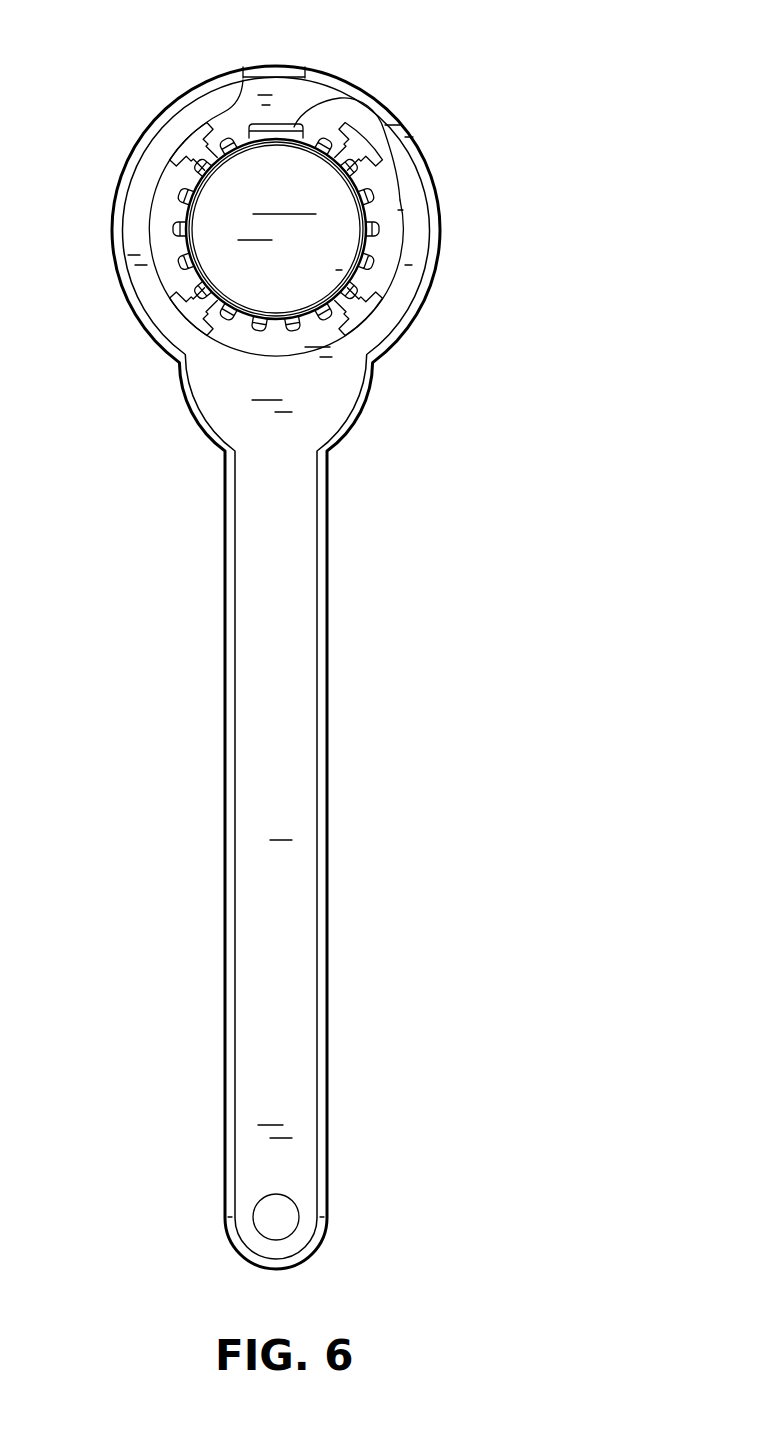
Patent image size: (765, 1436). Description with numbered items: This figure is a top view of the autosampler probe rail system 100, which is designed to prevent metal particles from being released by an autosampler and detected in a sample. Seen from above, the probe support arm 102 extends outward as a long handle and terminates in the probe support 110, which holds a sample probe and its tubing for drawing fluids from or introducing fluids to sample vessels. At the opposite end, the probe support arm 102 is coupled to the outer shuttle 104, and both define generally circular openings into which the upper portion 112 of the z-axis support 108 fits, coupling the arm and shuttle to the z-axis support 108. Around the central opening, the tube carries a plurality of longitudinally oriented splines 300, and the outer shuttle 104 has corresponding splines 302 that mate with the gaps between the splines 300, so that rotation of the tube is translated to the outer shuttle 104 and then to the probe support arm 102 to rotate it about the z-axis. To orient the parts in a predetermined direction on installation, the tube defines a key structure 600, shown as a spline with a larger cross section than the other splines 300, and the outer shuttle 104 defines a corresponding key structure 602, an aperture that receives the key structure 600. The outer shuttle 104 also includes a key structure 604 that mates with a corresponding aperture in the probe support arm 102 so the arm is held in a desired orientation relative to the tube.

The autosampler probe rail system 100 is at (560, 58).
The probe support arm 102 is at (315, 384).
The outer shuttle 104 is at (276, 80).
The z-axis support 108 is at (333, 197).
The probe support 110 is at (252, 1250).
The upper portion 112 is at (302, 265).
The splines 300 is at (326, 140).
The splines 302 is at (183, 172).
The key structure 600 is at (362, 97).
The key structure 602 is at (278, 122).
The key structure 604 is at (241, 80).